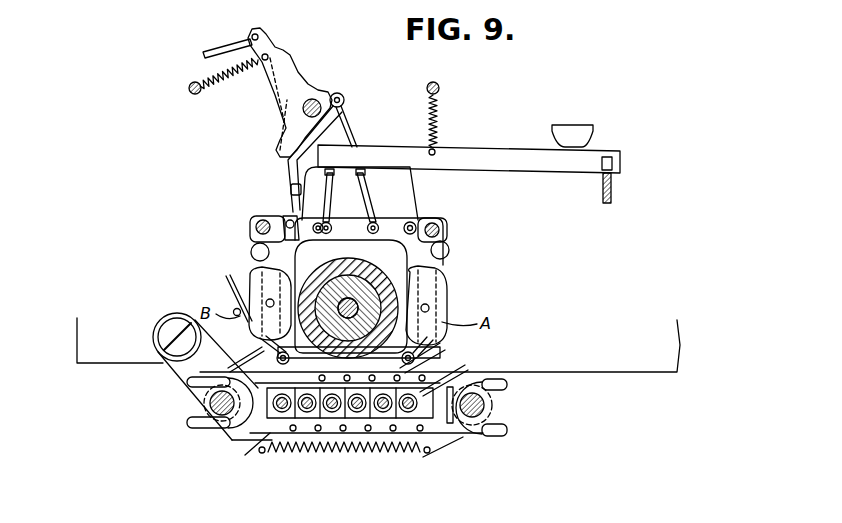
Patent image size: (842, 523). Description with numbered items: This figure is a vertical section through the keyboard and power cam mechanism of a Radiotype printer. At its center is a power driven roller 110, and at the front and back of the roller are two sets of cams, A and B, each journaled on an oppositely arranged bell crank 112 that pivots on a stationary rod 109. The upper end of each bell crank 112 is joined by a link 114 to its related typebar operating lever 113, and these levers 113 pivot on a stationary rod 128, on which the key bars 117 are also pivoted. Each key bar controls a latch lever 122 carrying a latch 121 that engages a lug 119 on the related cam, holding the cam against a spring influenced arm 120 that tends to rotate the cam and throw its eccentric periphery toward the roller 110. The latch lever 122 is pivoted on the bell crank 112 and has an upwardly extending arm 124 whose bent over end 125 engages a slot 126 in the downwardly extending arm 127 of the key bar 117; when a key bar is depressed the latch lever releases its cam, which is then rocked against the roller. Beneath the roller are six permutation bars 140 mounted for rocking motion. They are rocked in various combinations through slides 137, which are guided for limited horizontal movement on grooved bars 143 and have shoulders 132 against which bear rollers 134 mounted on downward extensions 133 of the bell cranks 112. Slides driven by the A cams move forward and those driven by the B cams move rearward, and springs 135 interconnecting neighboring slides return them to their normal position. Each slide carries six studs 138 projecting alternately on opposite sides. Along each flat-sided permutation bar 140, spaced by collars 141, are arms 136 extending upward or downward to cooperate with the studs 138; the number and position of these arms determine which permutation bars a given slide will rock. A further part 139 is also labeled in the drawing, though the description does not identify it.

The stationary rod 109 is at (437, 222).
The power driven roller 110 is at (380, 258).
The bell crank 112 is at (452, 249).
The typebar operating lever 113 is at (288, 73).
The link 114 is at (358, 187).
The key bar 117 is at (478, 157).
The lug 119 is at (228, 280).
The spring influenced arm 120 is at (267, 343).
The latch 121 is at (233, 312).
The latch lever 122 is at (448, 278).
The upwardly extending arm 124 is at (253, 235).
The bent over end 125 is at (278, 209).
The slot 126 is at (297, 190).
The downwardly extending arm 127 is at (290, 177).
The stationary rod 128 is at (320, 93).
The shoulder 132 is at (230, 364).
The downward extension 133 is at (437, 348).
The roller 134 is at (297, 360).
The spring 135 is at (298, 453).
The arm 136 is at (443, 372).
The slide 137 is at (448, 447).
The stud 138 is at (402, 353).
The roller box 139 is at (265, 442).
The permutation bar 140 is at (310, 408).
The collar 141 is at (365, 408).
The grooved bar 143 is at (507, 405).